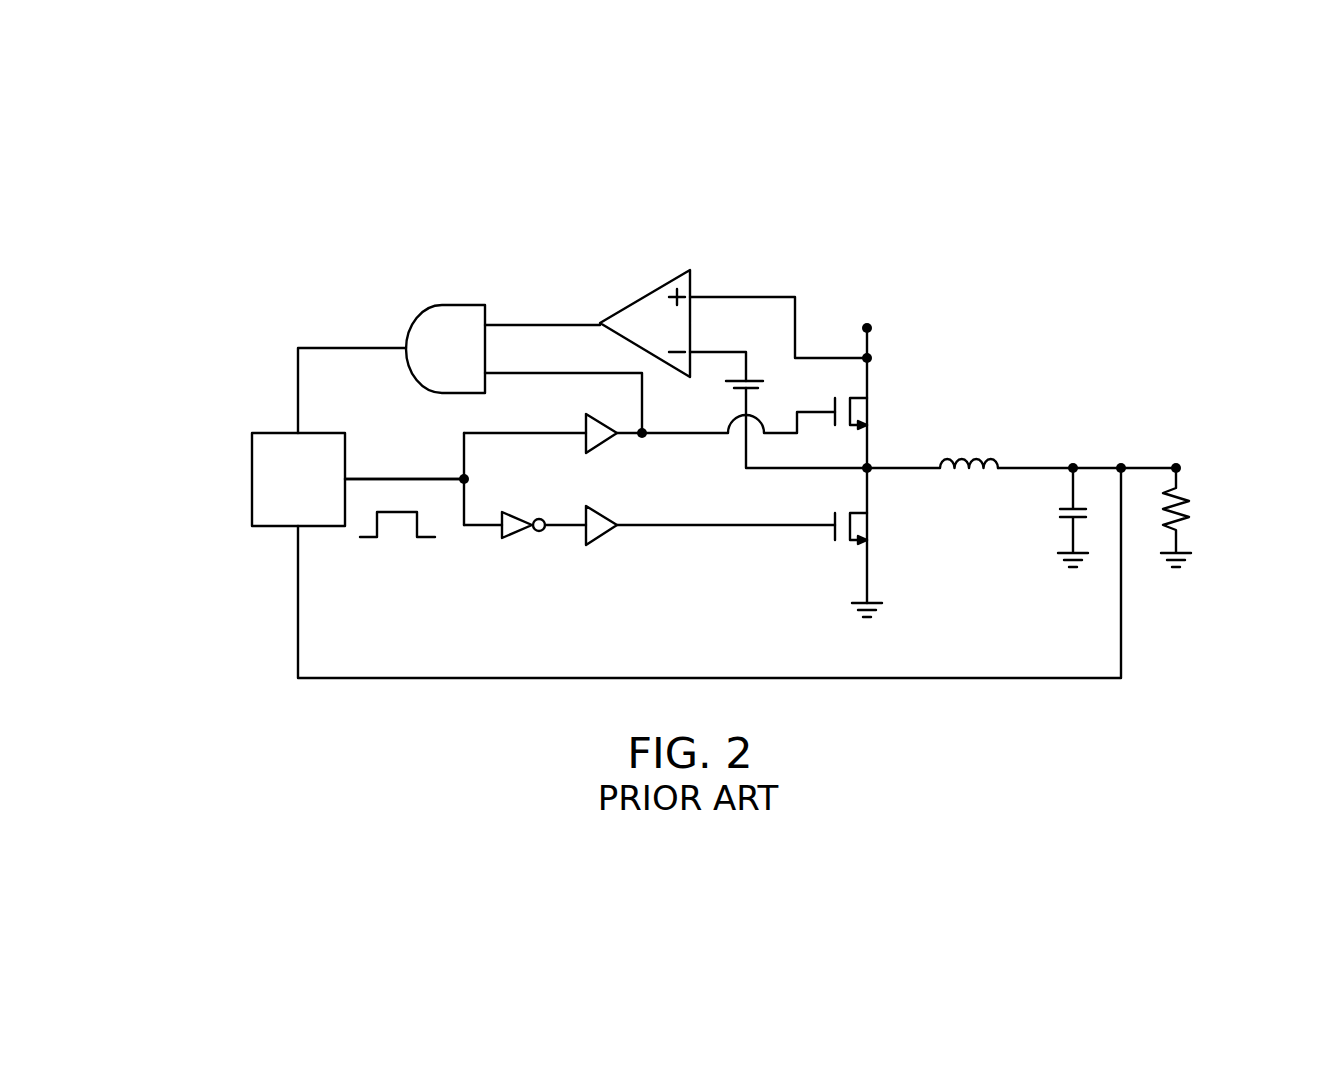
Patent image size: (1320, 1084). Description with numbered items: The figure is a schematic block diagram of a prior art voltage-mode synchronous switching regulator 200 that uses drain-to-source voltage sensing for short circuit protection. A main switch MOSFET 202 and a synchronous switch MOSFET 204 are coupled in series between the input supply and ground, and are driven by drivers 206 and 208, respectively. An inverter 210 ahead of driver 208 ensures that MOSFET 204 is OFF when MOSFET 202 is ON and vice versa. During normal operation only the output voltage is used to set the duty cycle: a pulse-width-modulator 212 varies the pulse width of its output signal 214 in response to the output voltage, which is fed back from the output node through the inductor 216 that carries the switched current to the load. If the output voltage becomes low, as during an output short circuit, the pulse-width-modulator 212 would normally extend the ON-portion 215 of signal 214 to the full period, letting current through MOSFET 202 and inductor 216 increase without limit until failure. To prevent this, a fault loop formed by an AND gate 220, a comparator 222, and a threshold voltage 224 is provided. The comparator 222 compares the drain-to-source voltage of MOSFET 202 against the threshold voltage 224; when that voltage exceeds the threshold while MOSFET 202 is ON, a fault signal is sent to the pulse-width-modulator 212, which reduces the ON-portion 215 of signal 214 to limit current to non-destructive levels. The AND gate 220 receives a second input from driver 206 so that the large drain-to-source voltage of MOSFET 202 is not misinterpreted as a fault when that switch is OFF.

The voltage-mode synchronous switching regulator 200 is at (1022, 302).
The main switch MOSFET 202 is at (870, 414).
The synchronous switch MOSFET 204 is at (857, 519).
The driver 206 is at (603, 445).
The driver 208 is at (603, 536).
The inverter 210 is at (512, 536).
The pulse-width-modulator 212 is at (252, 517).
The output signal 214 is at (370, 537).
The ON-portion 215 is at (400, 512).
The inductor 216 is at (993, 455).
The AND gate 220 is at (408, 328).
The comparator 222 is at (626, 306).
The threshold voltage 224 is at (740, 392).